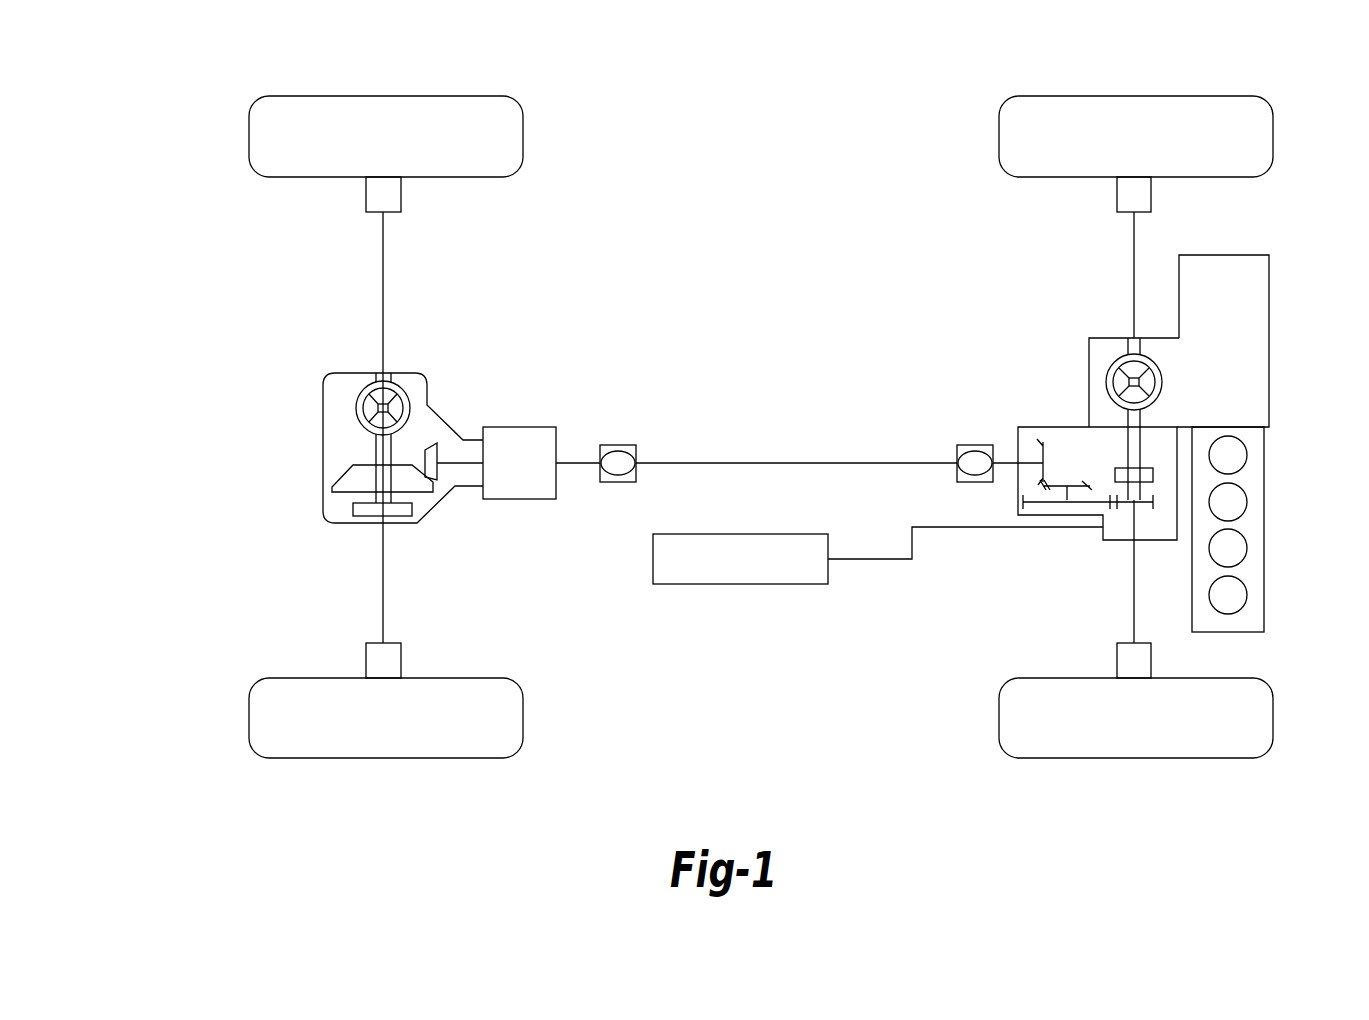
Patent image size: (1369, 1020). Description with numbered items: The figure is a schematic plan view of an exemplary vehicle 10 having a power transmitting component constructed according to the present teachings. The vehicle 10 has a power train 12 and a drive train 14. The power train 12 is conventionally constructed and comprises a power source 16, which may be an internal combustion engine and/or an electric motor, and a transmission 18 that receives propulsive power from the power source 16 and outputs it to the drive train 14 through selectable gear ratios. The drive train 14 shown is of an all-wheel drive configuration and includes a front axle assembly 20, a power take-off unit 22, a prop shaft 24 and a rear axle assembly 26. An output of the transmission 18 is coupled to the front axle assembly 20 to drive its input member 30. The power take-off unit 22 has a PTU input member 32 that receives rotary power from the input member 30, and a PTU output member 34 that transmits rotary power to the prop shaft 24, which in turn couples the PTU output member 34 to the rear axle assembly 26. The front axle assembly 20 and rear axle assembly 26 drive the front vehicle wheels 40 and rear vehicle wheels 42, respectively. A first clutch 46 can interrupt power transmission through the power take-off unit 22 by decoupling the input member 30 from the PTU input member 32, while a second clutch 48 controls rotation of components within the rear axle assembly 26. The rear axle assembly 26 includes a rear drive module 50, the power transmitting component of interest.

The vehicle 10 is at (197, 803).
The power train 12 is at (1256, 451).
The drive train 14 is at (799, 399).
The power source 16 is at (1257, 623).
The transmission 18 is at (1260, 270).
The front axle assembly 20 is at (1130, 383).
The power take-off unit 22 is at (1127, 475).
The prop shaft 24 is at (686, 463).
The rear axle assembly 26 is at (383, 466).
The input member 30 is at (1163, 385).
The PTU input member 32 is at (1123, 503).
The PTU output member 34 is at (1003, 463).
The front vehicle wheels 40 is at (999, 133).
The rear vehicle wheels 42 is at (249, 133).
The first clutch 46 is at (1153, 475).
The second clutch 48 is at (363, 515).
The rear drive module 50 is at (327, 450).